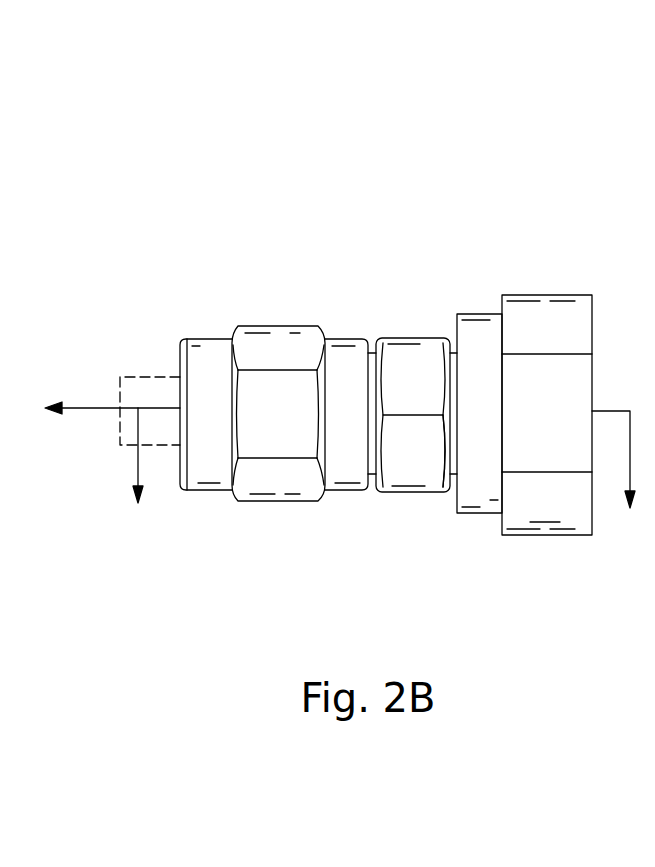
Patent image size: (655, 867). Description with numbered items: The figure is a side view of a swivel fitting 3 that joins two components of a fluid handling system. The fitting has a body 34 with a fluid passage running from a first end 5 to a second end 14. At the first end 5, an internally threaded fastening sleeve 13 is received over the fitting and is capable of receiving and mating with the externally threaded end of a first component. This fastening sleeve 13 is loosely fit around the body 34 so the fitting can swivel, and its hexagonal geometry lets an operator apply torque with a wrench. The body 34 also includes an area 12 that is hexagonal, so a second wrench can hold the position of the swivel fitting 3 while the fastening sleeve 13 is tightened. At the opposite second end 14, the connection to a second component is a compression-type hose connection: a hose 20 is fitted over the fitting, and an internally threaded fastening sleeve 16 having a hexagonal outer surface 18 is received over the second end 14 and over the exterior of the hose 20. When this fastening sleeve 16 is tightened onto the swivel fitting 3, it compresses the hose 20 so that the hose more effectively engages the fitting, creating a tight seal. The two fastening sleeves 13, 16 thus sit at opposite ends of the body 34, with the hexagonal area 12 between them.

The swivel fitting 3 is at (334, 156).
The first end 5 is at (580, 213).
The hexagonal area 12 is at (408, 362).
The fastening sleeve 13 is at (482, 342).
The second end 14 is at (307, 208).
The fastening sleeve 16 is at (208, 363).
The hexagonal outer surface 18 is at (275, 347).
The hose 20 is at (147, 377).
The body 34 is at (452, 435).